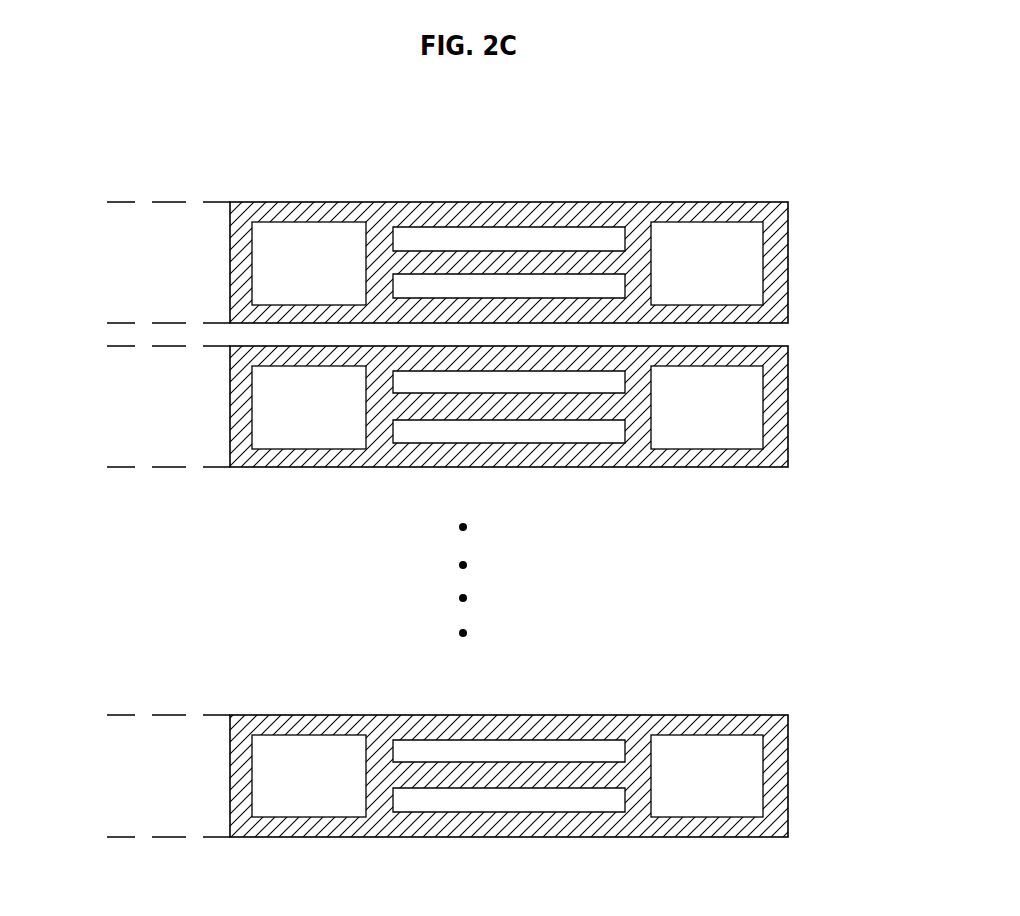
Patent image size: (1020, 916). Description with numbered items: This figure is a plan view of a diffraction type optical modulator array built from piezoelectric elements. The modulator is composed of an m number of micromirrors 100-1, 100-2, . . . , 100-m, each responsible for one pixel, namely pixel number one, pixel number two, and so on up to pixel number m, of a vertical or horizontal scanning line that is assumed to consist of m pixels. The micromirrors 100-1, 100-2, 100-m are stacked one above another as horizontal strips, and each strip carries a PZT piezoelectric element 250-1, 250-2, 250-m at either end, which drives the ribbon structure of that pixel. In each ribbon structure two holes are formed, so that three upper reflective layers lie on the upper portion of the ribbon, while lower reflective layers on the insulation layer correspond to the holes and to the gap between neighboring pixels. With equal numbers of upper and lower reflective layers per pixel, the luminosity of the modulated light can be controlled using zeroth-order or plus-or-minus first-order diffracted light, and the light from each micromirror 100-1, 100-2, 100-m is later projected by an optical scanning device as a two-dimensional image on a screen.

The micromirror 100-1 is at (476, 215).
The micromirror 100-2 is at (476, 463).
The micromirror 100-m is at (476, 729).
The piezoelectric element 250-1 is at (752, 263).
The piezoelectric element 250-2 is at (752, 402).
The piezoelectric element 250-m is at (750, 773).